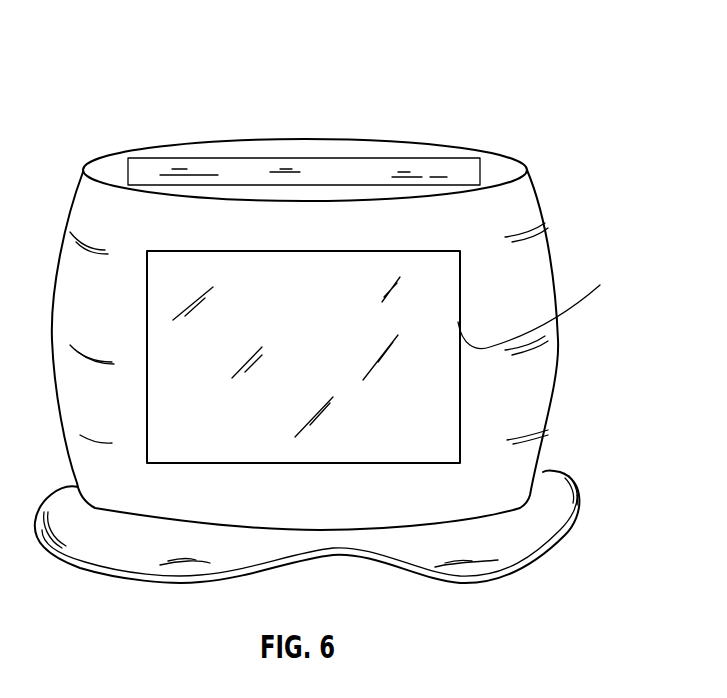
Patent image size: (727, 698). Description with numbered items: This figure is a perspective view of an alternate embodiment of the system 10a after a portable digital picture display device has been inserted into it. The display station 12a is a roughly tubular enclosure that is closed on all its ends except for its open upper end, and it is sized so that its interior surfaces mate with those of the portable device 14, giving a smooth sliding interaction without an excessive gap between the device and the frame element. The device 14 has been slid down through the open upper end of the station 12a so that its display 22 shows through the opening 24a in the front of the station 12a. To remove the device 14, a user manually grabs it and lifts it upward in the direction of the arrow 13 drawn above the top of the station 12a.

The system 10a is at (350, 293).
The display station 12a is at (560, 360).
The direction of removal 13 is at (330, 168).
The portable device 14 is at (172, 165).
The display 22 is at (313, 349).
The opening 24a is at (550, 305).